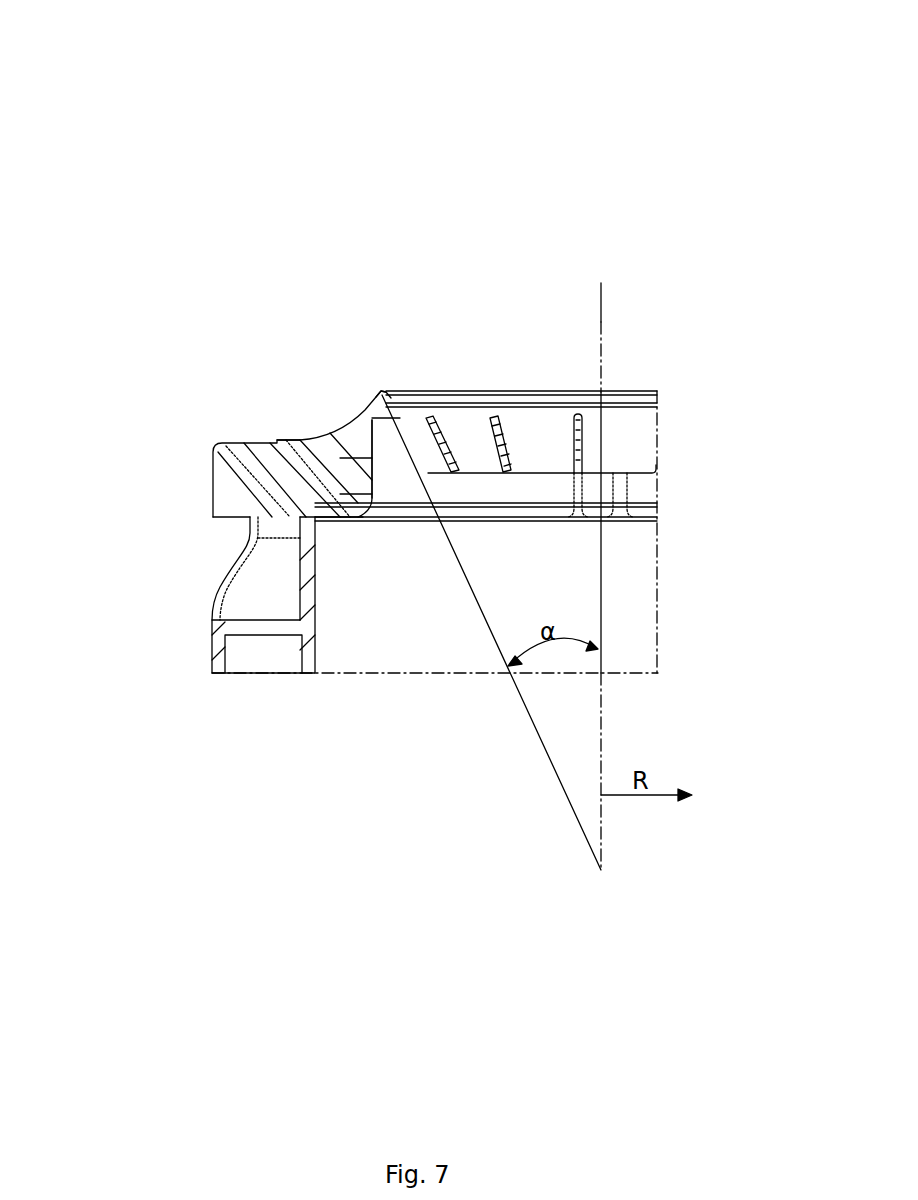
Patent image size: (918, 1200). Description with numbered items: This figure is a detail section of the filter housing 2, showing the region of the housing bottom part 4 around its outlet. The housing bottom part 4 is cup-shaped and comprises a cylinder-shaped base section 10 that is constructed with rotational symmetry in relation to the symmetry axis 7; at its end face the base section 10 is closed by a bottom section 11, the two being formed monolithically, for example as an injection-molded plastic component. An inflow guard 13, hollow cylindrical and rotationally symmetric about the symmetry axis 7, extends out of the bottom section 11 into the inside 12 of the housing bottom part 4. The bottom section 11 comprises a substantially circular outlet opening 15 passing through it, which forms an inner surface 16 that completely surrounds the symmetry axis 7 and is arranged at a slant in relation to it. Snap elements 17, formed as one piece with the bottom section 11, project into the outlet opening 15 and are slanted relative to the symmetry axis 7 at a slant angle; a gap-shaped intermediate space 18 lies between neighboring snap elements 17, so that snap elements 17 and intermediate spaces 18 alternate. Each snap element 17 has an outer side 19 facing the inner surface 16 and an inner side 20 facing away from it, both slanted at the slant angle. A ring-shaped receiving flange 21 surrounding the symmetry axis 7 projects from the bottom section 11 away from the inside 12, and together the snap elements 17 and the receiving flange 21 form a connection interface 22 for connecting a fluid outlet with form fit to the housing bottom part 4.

The filter housing 2 is at (415, 72).
The housing bottom part 4 is at (240, 428).
The symmetry axis 7 is at (601, 318).
The base section 10 is at (212, 655).
The bottom section 11 is at (279, 440).
The inside 12 is at (491, 632).
The inflow guard 13 is at (302, 660).
The outlet opening 15 is at (402, 465).
The inner surface 16 is at (335, 495).
The snap element 17 is at (423, 435).
The intermediate space 18 is at (493, 416).
The outer side 19 is at (400, 460).
The inner side 20 is at (440, 460).
The receiving flange 21 is at (383, 390).
The connection interface 22 is at (428, 258).